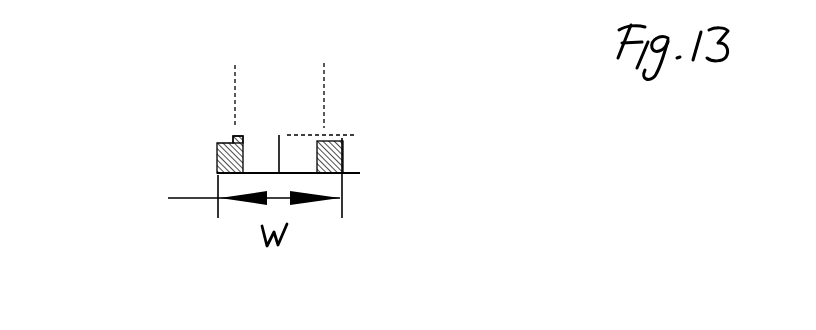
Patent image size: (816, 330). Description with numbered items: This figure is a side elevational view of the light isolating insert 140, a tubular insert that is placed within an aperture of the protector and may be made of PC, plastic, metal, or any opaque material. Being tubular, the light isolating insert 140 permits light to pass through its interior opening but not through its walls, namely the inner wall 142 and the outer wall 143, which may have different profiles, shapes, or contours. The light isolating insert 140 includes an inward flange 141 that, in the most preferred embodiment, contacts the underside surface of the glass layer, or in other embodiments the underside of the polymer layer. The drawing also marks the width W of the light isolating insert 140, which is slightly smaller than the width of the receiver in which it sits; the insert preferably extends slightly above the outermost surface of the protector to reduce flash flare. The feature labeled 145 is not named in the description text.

The light isolating insert 140 is at (198, 145).
The inward flange 141 is at (230, 143).
The inner wall 142 is at (155, 242).
The outer wall 143 is at (243, 155).
The second conductive block 145 is at (325, 140).